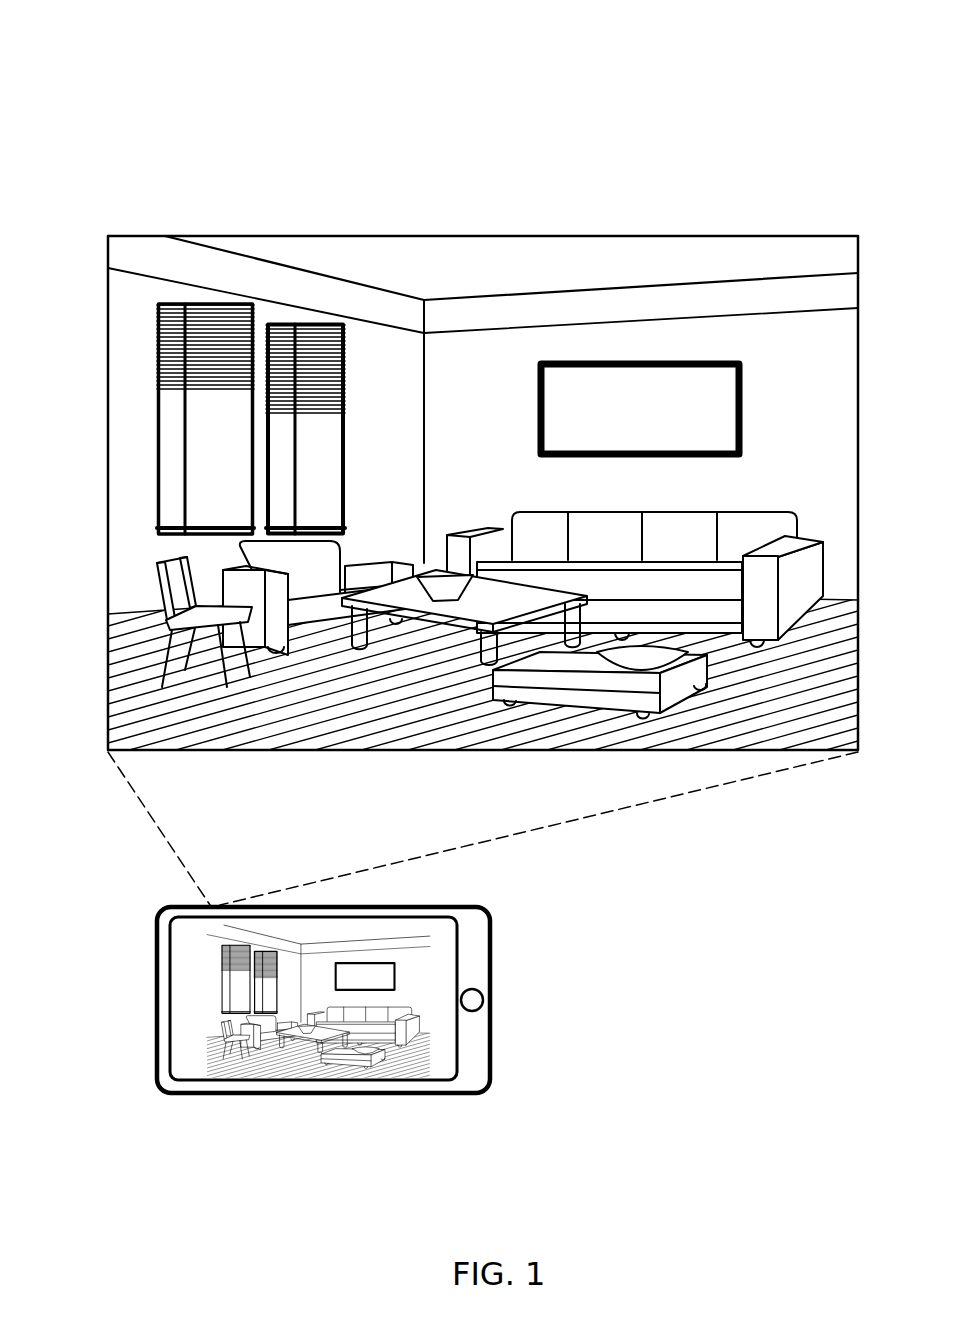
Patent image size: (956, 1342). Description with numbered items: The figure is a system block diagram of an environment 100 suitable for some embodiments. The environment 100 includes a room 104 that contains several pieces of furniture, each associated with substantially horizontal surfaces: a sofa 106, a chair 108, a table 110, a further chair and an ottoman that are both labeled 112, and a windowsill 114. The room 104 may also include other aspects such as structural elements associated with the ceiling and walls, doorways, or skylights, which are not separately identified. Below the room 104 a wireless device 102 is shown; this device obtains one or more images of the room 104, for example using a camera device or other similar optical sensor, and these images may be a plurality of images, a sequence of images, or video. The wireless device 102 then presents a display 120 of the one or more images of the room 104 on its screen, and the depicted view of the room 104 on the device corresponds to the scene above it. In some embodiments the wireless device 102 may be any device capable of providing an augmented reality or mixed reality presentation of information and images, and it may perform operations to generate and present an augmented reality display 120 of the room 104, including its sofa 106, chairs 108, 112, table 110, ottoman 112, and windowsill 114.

The environment 100 is at (64, 75).
The wireless device 102 is at (490, 1088).
The room 104 is at (605, 235).
The sofa 106 is at (682, 577).
The chair 108 is at (324, 597).
The table 110 is at (495, 602).
The chair and ottoman 112 is at (200, 616).
The windowsill 114 is at (303, 523).
The display 120 is at (253, 1067).